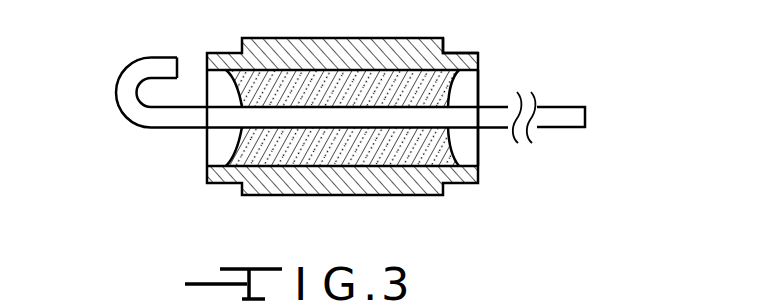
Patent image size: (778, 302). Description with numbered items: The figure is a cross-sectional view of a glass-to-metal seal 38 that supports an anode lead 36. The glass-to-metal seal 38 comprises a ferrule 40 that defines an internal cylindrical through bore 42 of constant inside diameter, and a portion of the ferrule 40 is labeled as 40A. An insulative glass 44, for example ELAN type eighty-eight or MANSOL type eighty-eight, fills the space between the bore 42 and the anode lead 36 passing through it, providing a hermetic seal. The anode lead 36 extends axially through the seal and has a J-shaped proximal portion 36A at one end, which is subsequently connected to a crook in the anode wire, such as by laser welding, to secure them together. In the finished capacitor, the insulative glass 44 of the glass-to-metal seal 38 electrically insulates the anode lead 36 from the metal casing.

The anode lead 36 is at (566, 114).
The J-shaped proximal portion 36A is at (126, 95).
The glass-to-metal seal 38 is at (588, 49).
The ferrule 40 is at (412, 187).
The flange of housing 40A is at (446, 49).
The through bore 42 is at (478, 156).
The insulative glass 44 is at (457, 87).